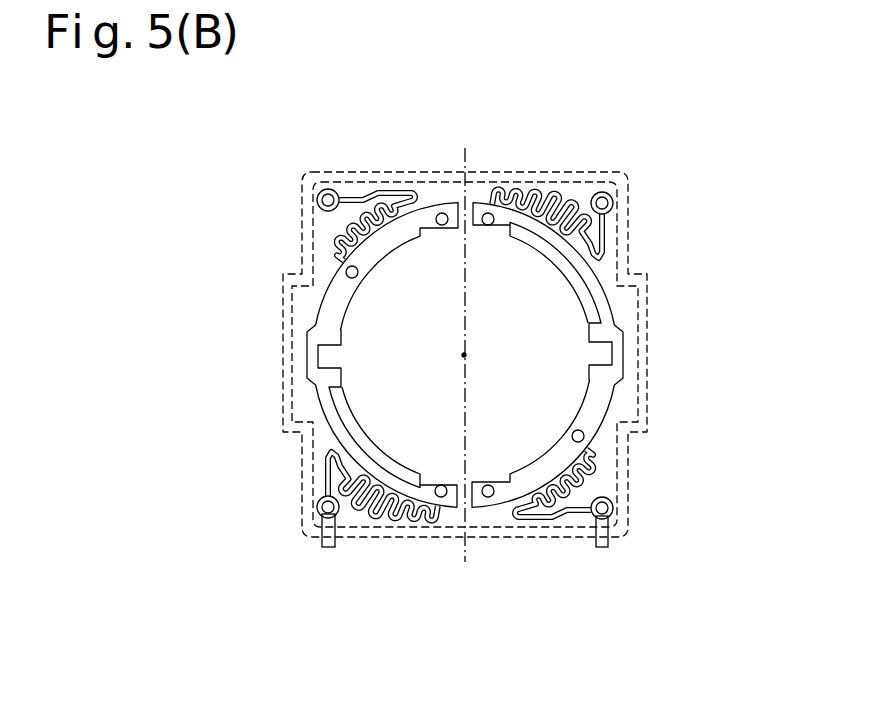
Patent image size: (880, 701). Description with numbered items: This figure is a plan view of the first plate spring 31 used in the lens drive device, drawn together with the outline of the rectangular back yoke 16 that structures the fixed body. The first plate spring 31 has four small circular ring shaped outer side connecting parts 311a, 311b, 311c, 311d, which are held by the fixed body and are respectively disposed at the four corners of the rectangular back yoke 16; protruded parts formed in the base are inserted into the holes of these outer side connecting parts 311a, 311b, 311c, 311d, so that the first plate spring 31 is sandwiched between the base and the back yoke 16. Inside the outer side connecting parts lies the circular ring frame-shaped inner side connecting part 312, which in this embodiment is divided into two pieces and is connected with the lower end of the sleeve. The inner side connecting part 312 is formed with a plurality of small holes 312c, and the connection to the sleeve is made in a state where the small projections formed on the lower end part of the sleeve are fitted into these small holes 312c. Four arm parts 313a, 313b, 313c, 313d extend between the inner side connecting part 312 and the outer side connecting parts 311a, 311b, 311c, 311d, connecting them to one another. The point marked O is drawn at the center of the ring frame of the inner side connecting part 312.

The first plate spring 31 is at (470, 340).
The back yoke 16 is at (626, 247).
The inner side connecting part 312 is at (562, 258).
The small holes 312c is at (443, 225).
The arm part 313a is at (550, 193).
The arm part 313b is at (323, 235).
The arm part 313c is at (354, 512).
The arm part 313d is at (600, 469).
The outer side connecting part 311a is at (601, 192).
The outer side connecting part 311b is at (331, 189).
The outer side connecting part 311c is at (317, 506).
The outer side connecting part 311d is at (613, 508).
The optical axis center O is at (464, 358).